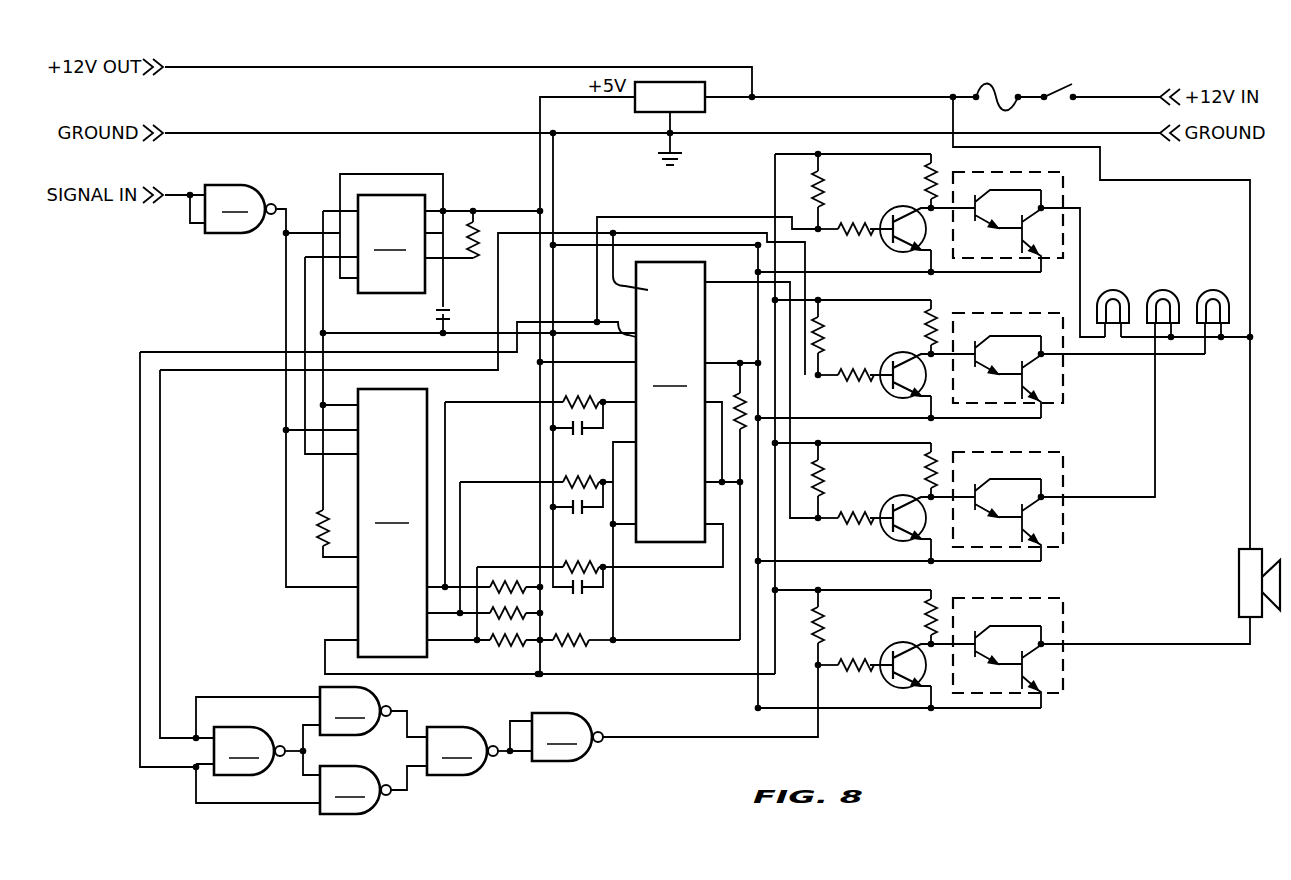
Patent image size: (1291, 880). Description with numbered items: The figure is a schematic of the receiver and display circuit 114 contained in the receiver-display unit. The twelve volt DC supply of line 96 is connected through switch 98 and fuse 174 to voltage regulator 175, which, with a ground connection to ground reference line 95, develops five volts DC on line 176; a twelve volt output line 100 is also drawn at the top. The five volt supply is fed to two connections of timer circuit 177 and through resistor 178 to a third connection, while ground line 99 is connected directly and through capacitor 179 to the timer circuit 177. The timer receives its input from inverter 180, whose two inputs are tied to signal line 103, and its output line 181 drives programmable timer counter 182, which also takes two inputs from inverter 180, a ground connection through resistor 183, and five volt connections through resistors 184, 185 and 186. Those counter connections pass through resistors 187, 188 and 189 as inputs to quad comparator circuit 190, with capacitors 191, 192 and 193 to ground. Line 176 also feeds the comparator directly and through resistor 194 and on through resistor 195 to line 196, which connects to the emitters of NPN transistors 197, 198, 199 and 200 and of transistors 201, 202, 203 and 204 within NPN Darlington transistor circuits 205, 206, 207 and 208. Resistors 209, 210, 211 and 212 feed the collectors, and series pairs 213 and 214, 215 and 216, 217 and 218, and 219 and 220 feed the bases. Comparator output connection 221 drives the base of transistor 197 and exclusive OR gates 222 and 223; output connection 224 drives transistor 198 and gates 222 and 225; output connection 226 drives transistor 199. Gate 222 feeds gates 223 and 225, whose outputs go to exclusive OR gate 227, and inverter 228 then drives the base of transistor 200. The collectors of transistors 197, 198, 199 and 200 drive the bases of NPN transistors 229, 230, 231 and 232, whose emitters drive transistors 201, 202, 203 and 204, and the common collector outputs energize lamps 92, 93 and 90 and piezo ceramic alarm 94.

The +12V output line 100 is at (333, 67).
The ground line 99 is at (288, 133).
The signal line 103 is at (181, 195).
The voltage regulator 175 is at (706, 105).
The +5 volt DC line 176 is at (540, 112).
The fuse 174 is at (966, 94).
The switch 98 is at (1062, 88).
The +12 volt DC line 96 is at (1125, 97).
The ground reference line 95 is at (1125, 133).
The inverter 180 is at (281, 386).
The timer circuit 177 is at (431, 240).
The resistor 178 is at (478, 240).
The capacitor 179 is at (440, 319).
The output line 181 is at (305, 280).
The programmable timer counter 182 is at (478, 434).
The resistor 183 is at (318, 523).
The resistor 184 is at (502, 642).
The resistor 185 is at (507, 615).
The resistor 186 is at (500, 587).
The resistor 187 is at (590, 567).
The resistor 188 is at (590, 482).
The resistor 189 is at (583, 402).
The quad comparator circuit 190 is at (669, 452).
The capacitor 191 is at (600, 592).
The capacitor 192 is at (553, 507).
The capacitor 193 is at (554, 428).
The resistor 194 is at (588, 639).
The resistor 195 is at (742, 392).
The line 196 is at (756, 321).
The output connection 221 is at (640, 338).
The output connection 224 is at (650, 268).
The output connection 226 is at (725, 283).
The exclusive OR gate 222 is at (260, 751).
The exclusive OR gate 223 is at (373, 790).
The exclusive OR gate 225 is at (373, 712).
The exclusive OR gate 227 is at (470, 751).
The inverter 228 is at (675, 713).
The NPN transistor 197 is at (882, 241).
The NPN transistor 198 is at (882, 389).
The NPN transistor 199 is at (872, 535).
The NPN transistor 200 is at (874, 683).
The resistor 209 is at (926, 186).
The resistor 210 is at (935, 322).
The resistor 211 is at (934, 468).
The resistor 212 is at (929, 612).
The resistor 213 is at (820, 180).
The resistor 214 is at (866, 229).
The resistor 215 is at (822, 336).
The resistor 216 is at (873, 374).
The resistor 217 is at (822, 479).
The resistor 218 is at (873, 514).
The resistor 219 is at (824, 616).
The resistor 220 is at (873, 662).
The NPN Darlington transistor circuit 205 is at (1066, 180).
The NPN Darlington transistor circuit 206 is at (1063, 383).
The NPN Darlington transistor circuit 207 is at (1063, 528).
The NPN Darlington transistor circuit 208 is at (1065, 636).
The NPN transistor 229 is at (987, 198).
The NPN transistor 230 is at (987, 344).
The NPN transistor 231 is at (987, 487).
The NPN transistor 232 is at (987, 634).
The transistor 201 is at (1028, 224).
The transistor 202 is at (1028, 370).
The transistor 203 is at (1028, 512).
The transistor 204 is at (1028, 660).
The lamp 92 is at (1113, 290).
The lamp 90 is at (1163, 290).
The lamp 93 is at (1213, 290).
The piezo ceramic alarm 94 is at (1239, 564).
The receiver and display circuit 114 is at (1072, 720).